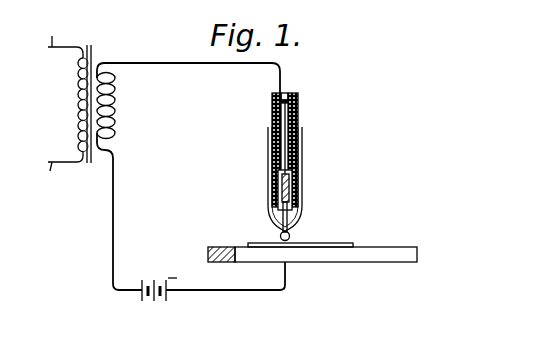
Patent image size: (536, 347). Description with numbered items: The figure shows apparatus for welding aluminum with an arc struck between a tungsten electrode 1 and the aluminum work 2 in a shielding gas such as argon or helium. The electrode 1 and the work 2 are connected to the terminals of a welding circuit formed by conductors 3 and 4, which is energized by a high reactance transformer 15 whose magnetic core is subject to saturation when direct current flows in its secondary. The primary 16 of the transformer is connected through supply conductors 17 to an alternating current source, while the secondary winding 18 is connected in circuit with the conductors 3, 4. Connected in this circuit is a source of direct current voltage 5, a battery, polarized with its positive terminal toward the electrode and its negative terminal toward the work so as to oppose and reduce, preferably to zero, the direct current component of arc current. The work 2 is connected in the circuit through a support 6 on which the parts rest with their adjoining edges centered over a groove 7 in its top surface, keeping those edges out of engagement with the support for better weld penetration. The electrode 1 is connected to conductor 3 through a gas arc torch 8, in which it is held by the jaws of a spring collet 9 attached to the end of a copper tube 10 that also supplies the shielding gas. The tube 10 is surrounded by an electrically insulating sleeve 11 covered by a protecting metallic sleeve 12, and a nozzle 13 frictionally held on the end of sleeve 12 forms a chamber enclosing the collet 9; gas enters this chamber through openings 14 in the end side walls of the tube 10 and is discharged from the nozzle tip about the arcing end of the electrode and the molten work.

The tungsten electrode 1 is at (288, 221).
The aluminum work 2 is at (333, 243).
The welding circuit conductor 3 is at (205, 64).
The welding circuit conductor 4 is at (112, 224).
The source of direct current voltage 5 is at (152, 280).
The support 6 is at (397, 262).
The groove 7 is at (222, 247).
The gas arc torch 8 is at (289, 150).
The spring collet 9 is at (300, 186).
The copper tube 10 is at (286, 92).
The electrically insulating sleeve 11 is at (278, 91).
The protecting metallic sleeve 12 is at (300, 95).
The nozzle 13 is at (301, 160).
The openings 14 is at (276, 153).
The high reactance transformer 15 is at (101, 38).
The primary winding 16 is at (73, 98).
The supply conductors 17 is at (51, 104).
The secondary winding 18 is at (115, 107).